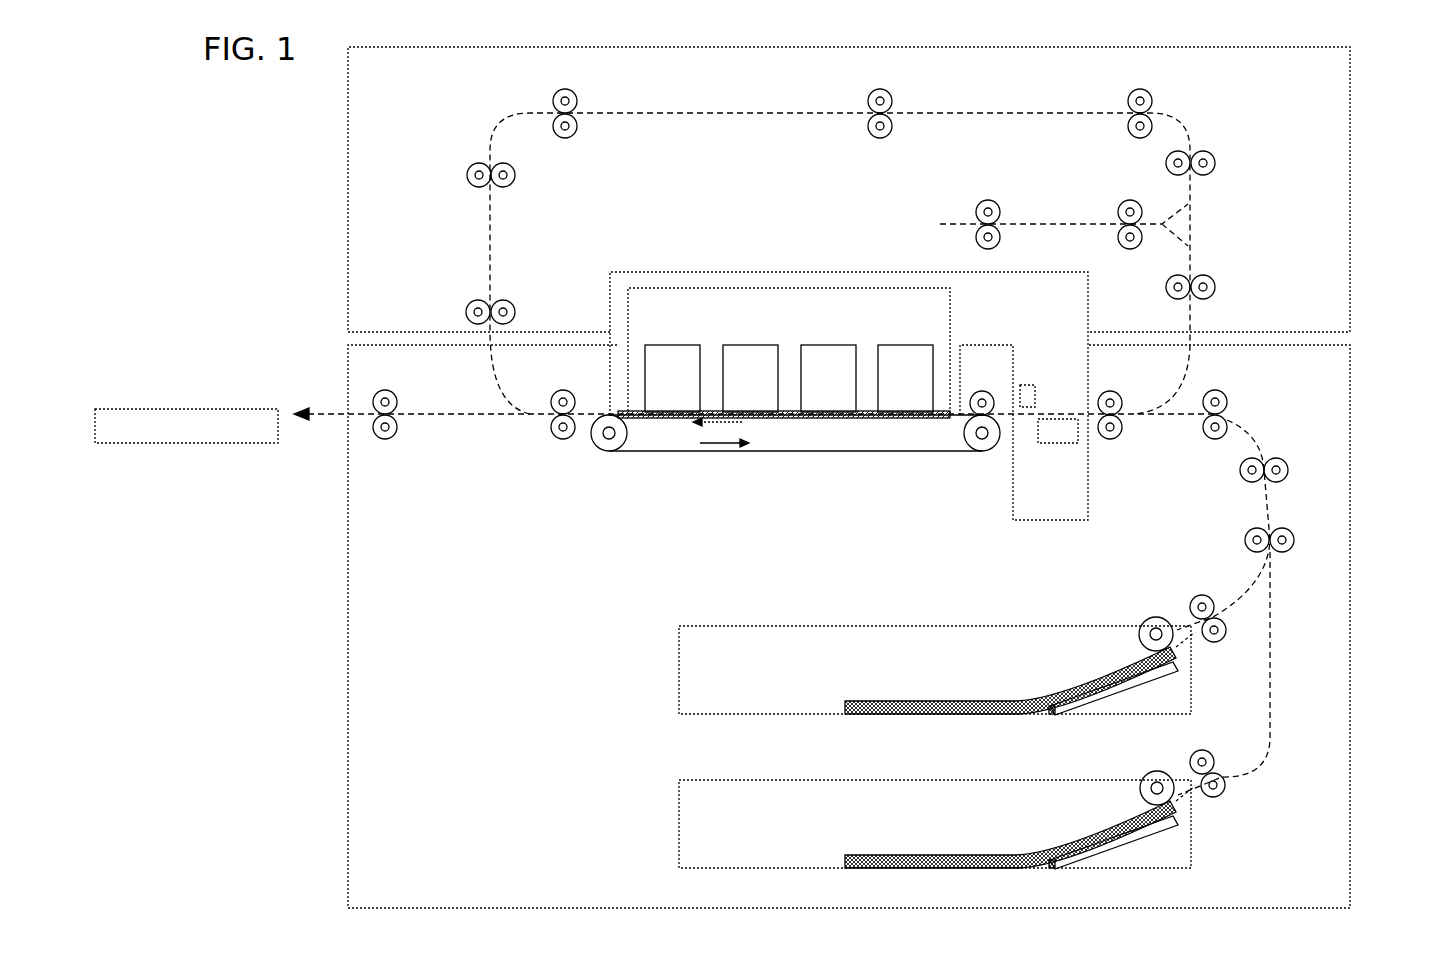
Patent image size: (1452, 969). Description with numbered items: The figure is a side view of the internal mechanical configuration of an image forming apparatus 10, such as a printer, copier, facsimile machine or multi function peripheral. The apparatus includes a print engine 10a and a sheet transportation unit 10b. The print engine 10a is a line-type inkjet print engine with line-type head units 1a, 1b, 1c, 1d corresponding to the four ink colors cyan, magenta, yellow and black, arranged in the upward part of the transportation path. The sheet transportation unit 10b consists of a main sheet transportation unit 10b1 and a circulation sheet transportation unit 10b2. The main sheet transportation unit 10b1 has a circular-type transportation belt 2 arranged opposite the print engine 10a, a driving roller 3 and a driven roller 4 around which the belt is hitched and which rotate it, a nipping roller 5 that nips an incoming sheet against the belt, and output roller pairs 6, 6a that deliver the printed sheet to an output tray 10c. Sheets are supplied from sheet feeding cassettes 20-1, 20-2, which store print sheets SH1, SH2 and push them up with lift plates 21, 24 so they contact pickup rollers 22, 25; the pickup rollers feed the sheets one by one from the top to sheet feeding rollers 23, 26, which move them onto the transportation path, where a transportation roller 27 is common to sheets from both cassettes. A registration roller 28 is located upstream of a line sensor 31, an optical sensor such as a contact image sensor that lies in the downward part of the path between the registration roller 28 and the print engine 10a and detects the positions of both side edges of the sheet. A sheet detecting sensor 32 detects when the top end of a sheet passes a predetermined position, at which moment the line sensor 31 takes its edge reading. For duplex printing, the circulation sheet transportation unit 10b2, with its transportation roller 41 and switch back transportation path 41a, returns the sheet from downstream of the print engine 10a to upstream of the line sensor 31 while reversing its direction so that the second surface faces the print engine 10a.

The line-type head unit 1a is at (912, 345).
The line-type head unit 1b is at (835, 345).
The line-type head unit 1c is at (757, 345).
The line-type head unit 1d is at (680, 345).
The transportation belt 2 is at (822, 453).
The driving roller 3 is at (600, 448).
The driven roller 4 is at (992, 447).
The nipping roller 5 is at (990, 393).
The output roller pair 6 is at (562, 390).
The output roller pair 6a is at (387, 390).
The image forming apparatus 10 is at (1385, 100).
The print engine 10a is at (952, 318).
The sheet transportation unit 10b is at (895, 477).
The main sheet transportation unit 10b1 is at (1354, 398).
The circulation sheet transportation unit 10b2 is at (1354, 288).
The output tray 10c is at (240, 409).
The sheet feeding cassette 20-1 is at (907, 666).
The sheet feeding cassette 20-2 is at (907, 821).
The lift plate 21 is at (1074, 703).
The pickup roller 22 is at (1148, 620).
The sheet feeding roller 23 is at (1192, 603).
The lift plate 24 is at (1074, 857).
The pickup roller 25 is at (1148, 773).
The sheet feeding roller 26 is at (1192, 758).
The transportation roller 27 is at (1218, 390).
The registration roller 28 is at (1111, 390).
The line sensor 31 is at (1052, 444).
The sheet detecting sensor 32 is at (1030, 384).
The transportation roller 41 is at (567, 89).
The switch back transportation path 41a is at (1050, 222).
The print sheet SH1 is at (856, 700).
The print sheet SH2 is at (856, 854).